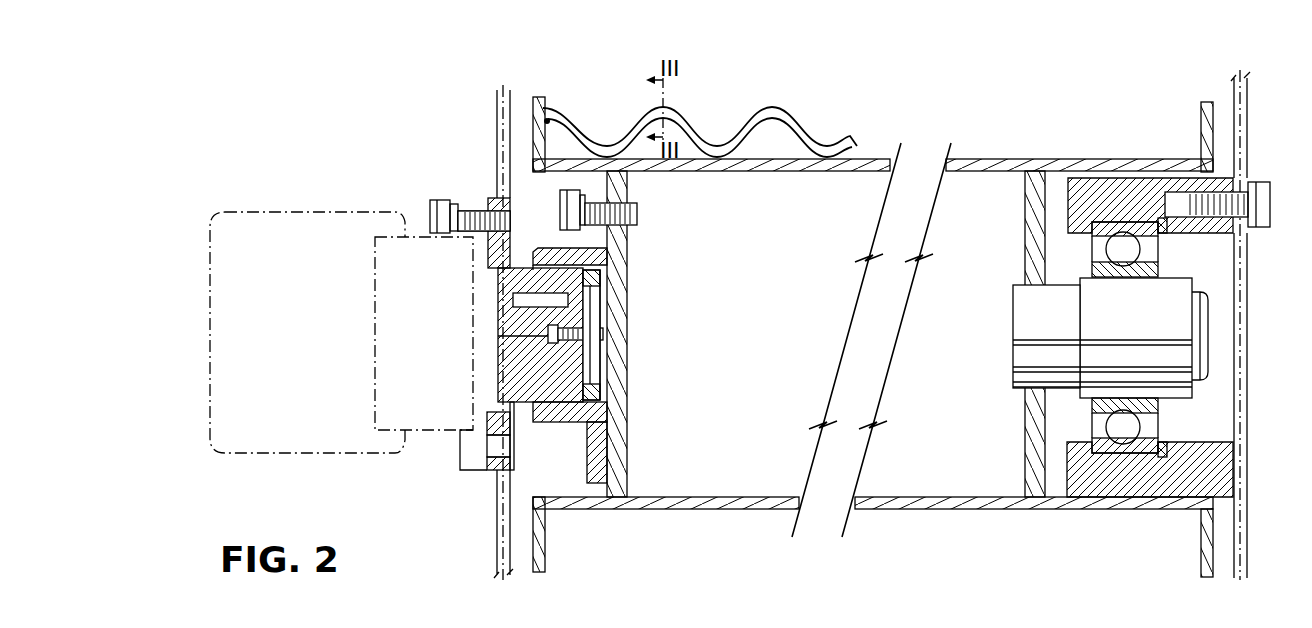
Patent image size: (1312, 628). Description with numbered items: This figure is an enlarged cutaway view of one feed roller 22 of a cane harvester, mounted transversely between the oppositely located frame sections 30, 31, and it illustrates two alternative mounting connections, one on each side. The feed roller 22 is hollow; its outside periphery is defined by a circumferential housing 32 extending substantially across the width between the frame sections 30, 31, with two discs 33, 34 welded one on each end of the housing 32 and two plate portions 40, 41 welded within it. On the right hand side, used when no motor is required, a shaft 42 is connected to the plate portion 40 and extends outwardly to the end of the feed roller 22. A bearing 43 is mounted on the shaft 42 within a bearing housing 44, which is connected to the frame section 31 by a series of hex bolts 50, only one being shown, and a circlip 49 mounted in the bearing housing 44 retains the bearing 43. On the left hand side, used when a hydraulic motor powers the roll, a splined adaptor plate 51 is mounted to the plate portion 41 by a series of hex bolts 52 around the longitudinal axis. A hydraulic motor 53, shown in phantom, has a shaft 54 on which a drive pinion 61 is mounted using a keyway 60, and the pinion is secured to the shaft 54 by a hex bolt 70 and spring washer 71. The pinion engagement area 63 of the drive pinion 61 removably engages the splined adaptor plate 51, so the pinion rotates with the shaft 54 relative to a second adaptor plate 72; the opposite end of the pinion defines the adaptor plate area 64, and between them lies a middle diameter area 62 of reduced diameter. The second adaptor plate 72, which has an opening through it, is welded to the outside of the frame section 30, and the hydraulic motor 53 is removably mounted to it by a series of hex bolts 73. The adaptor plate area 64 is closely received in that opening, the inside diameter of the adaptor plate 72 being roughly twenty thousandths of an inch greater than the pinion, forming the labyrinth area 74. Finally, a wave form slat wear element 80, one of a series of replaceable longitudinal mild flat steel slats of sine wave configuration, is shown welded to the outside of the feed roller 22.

The feed roller 22 is at (884, 124).
The frame section 30 is at (513, 572).
The frame section 31 is at (1252, 72).
The circumferential housing 32 is at (868, 510).
The disc 33 is at (547, 121).
The disc 34 is at (1212, 108).
The plate portion 40 is at (1025, 418).
The plate portion 41 is at (628, 443).
The shaft 42 is at (1205, 298).
The bearing 43 is at (1160, 412).
The bearing housing 44 is at (1218, 452).
The circlip 49 is at (1165, 235).
The hex bolt 50 is at (1262, 180).
The splined adaptor plate 51 is at (560, 197).
The hex bolt 52 is at (557, 237).
The hydraulic motor 53 is at (266, 210).
The shaft 54 is at (600, 370).
The keyway 60 is at (590, 300).
The drive pinion 61 is at (512, 392).
The middle diameter area 62 is at (512, 285).
The pinion engagement area 63 is at (560, 425).
The adaptor plate area 64 is at (497, 258).
The hex bolt 70 is at (605, 336).
The spring washer 71 is at (592, 357).
The second adaptor plate 72 is at (488, 458).
The hex bolt 73 is at (432, 212).
The labyrinth area 74 is at (490, 413).
The wave form slat wear element 80 is at (703, 121).